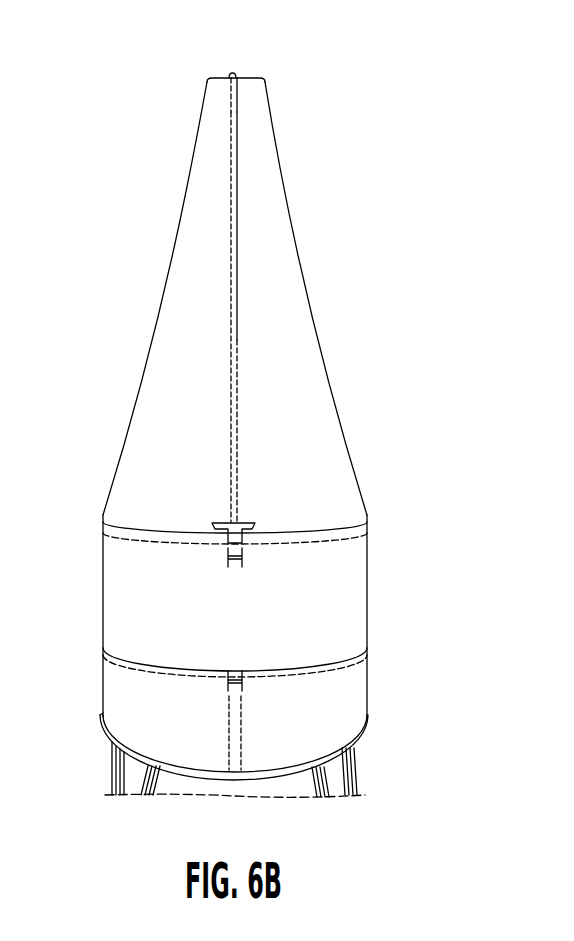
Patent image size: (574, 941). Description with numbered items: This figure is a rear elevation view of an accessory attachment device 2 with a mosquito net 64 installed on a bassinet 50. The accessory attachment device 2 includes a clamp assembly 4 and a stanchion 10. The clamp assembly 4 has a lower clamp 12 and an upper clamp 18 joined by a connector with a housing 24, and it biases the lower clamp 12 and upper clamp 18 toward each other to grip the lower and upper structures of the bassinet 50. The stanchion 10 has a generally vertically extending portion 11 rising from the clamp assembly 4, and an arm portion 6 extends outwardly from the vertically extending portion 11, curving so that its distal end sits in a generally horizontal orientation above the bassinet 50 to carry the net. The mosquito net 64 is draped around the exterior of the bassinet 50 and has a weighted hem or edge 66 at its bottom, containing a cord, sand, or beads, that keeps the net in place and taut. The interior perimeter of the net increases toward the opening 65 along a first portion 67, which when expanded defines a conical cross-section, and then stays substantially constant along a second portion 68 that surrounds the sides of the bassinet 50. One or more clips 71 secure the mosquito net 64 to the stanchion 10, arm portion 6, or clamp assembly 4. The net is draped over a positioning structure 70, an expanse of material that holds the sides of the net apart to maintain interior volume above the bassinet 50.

The accessory attachment device 2 is at (226, 447).
The clamp assembly 4 is at (222, 610).
The arm portion 6 is at (223, 97).
The stanchion 10 is at (237, 293).
The vertically extending portion 11 is at (215, 387).
The lower clamp 12 is at (265, 750).
The upper clamp 18 is at (256, 522).
The housing 24 is at (226, 618).
The bassinet 50 is at (355, 645).
The mosquito net 64 is at (182, 265).
The opening 65 is at (245, 78).
The weighted hem or edge 66 is at (113, 797).
The first portion 67 is at (191, 157).
The second portion 68 is at (364, 585).
The positioning structure 70 is at (218, 70).
The clips 71 is at (244, 552).